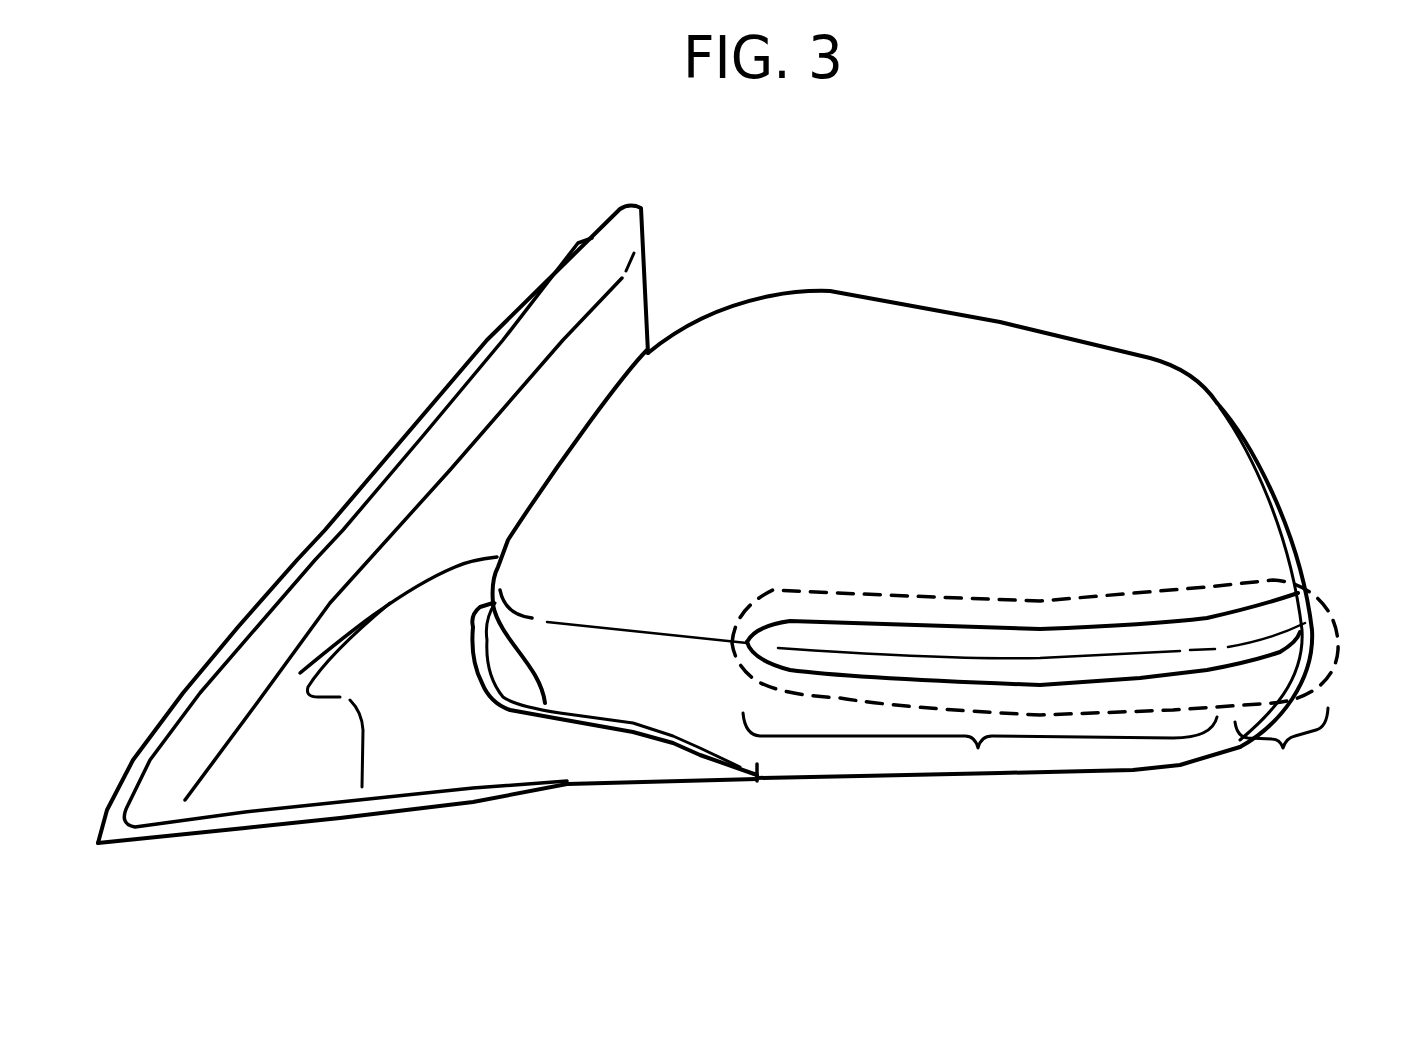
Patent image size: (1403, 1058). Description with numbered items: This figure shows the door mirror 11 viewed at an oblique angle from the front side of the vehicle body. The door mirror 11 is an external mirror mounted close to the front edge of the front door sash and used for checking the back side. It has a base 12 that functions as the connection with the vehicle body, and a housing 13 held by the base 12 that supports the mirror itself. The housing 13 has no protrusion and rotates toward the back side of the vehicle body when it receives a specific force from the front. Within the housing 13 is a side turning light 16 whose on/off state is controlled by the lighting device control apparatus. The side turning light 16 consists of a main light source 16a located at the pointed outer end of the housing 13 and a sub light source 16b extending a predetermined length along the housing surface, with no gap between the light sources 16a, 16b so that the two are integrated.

The door mirror 11 is at (1248, 415).
The base 12 is at (340, 468).
The housing 13 is at (840, 467).
The side turning light 16 is at (940, 592).
The main light source 16a is at (1283, 750).
The sub light source 16b is at (978, 750).